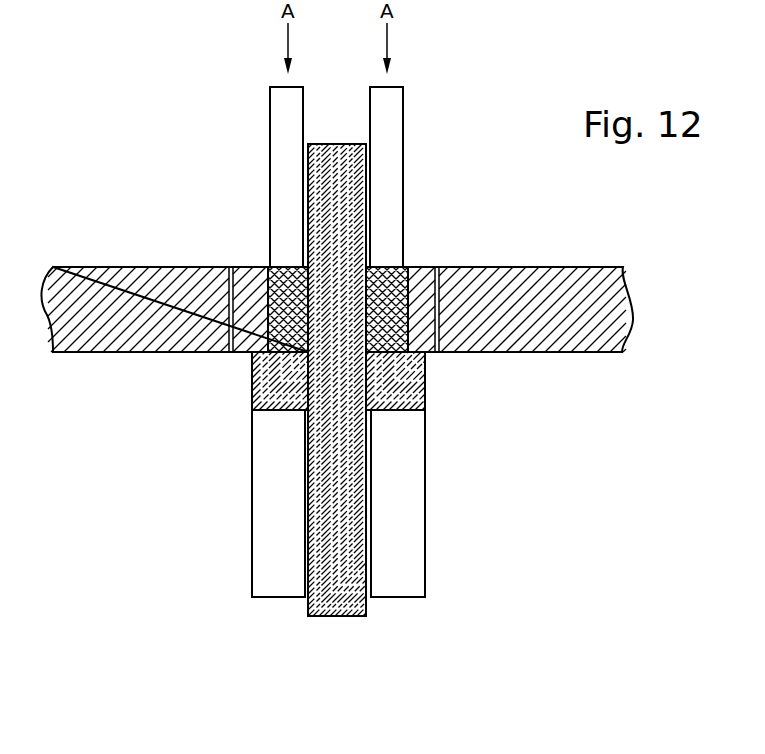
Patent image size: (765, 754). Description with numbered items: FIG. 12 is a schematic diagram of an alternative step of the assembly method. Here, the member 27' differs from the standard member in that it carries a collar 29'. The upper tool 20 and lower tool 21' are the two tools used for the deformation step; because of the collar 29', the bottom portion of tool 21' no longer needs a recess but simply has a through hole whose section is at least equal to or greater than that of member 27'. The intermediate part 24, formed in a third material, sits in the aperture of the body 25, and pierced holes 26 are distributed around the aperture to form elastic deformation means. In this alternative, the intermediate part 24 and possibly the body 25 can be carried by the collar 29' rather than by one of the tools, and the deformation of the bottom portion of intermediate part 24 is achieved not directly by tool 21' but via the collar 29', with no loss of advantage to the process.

The tool 20 is at (396, 127).
The intermediate part 24 is at (290, 293).
The body 25 is at (585, 288).
The pierced holes 26 is at (439, 246).
The collar 29' is at (367, 381).
The tool 21' is at (367, 503).
The member 27' is at (395, 380).